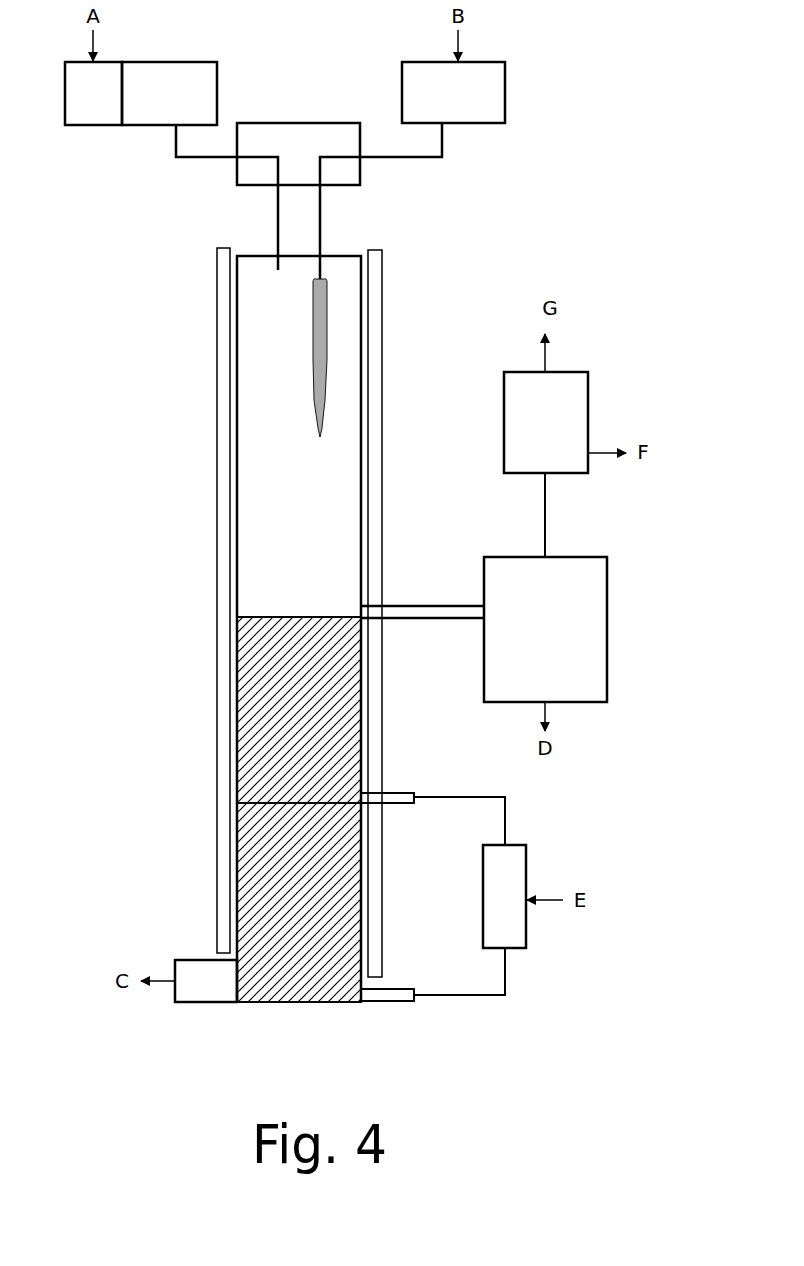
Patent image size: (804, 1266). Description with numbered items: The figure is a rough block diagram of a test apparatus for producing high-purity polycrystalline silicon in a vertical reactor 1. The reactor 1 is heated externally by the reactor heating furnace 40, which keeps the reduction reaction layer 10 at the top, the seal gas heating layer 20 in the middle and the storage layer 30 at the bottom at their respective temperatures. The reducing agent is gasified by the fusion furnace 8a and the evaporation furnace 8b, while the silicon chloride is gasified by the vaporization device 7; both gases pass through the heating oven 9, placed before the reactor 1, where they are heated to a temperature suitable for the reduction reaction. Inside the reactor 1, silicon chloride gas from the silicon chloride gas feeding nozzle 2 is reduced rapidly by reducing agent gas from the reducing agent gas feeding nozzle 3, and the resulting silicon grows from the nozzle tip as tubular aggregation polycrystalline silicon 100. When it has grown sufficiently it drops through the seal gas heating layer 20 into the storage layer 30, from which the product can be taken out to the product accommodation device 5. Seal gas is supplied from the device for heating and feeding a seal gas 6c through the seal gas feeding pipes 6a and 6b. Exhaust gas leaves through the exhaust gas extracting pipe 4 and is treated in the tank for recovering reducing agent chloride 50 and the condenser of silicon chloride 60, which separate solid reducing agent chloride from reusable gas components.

The reactor 1 is at (237, 432).
The silicon chloride gas feeding nozzle 2 is at (320, 205).
The reducing agent gas feeding nozzle 3 is at (278, 211).
The exhaust gas extracting pipe 4 is at (400, 603).
The product accommodation device 5 is at (211, 958).
The seal gas feeding pipe 6a is at (392, 792).
The seal gas feeding pipe 6b is at (390, 987).
The device for heating and feeding a seal gas 6c is at (512, 867).
The vaporization device 7 is at (483, 108).
The fusion furnace 8a is at (93, 108).
The evaporation furnace 8b is at (155, 108).
The heating oven 9 is at (298, 137).
The reduction reaction layer 10 is at (257, 537).
The seal gas heating layer 20 is at (257, 705).
The storage layer 30 is at (258, 853).
The reactor heating furnace 40 is at (382, 420).
The tank for recovering reducing agent chloride 50 is at (595, 612).
The condenser of silicon chloride 60 is at (565, 413).
The tubular aggregation polycrystalline silicon 100 is at (318, 408).